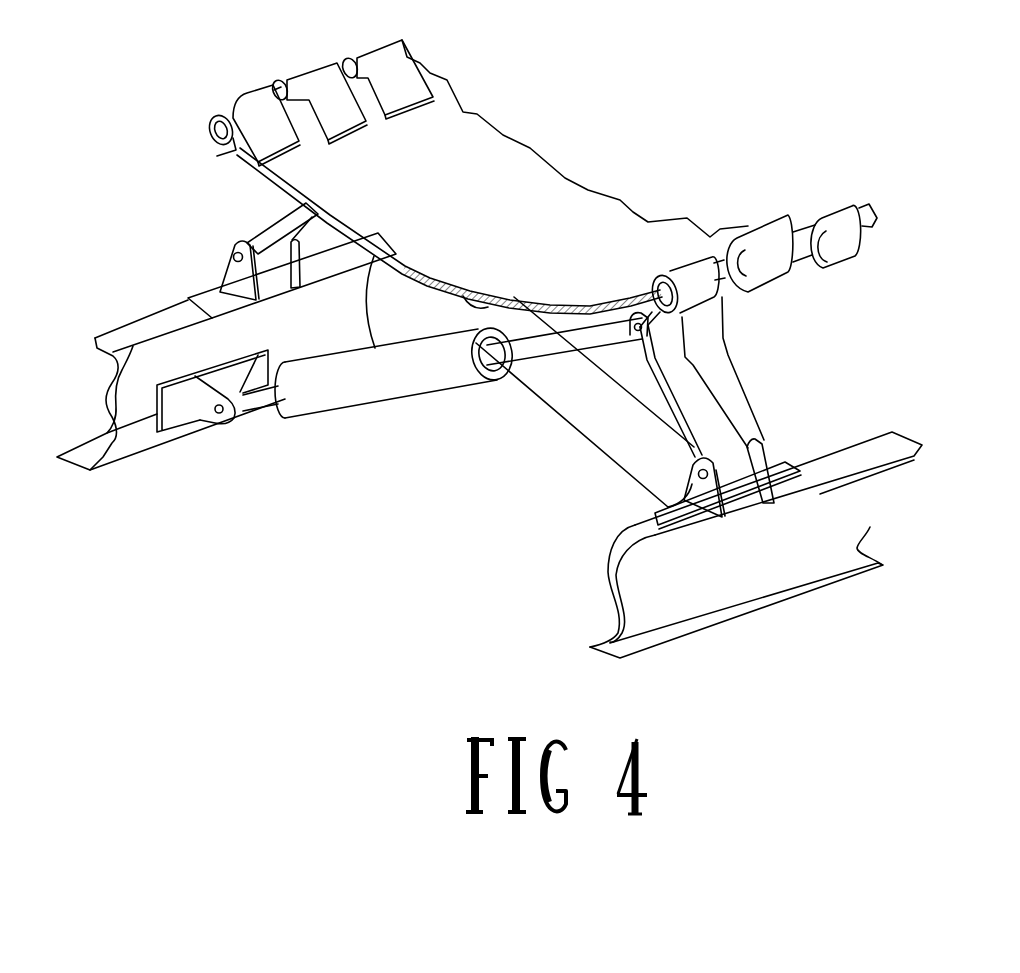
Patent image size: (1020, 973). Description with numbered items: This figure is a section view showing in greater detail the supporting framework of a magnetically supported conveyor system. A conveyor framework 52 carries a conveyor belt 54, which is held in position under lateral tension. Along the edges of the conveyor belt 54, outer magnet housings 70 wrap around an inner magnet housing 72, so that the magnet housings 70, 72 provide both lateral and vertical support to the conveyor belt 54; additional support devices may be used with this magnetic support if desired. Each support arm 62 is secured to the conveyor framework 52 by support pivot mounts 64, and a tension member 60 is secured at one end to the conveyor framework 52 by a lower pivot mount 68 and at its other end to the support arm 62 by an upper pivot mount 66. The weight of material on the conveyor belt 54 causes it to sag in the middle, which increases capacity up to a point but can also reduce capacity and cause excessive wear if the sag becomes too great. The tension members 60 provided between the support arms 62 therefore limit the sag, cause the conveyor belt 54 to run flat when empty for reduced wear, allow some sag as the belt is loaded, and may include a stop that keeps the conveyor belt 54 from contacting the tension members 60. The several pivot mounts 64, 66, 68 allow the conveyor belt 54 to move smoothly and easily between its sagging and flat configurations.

The conveyor framework 52 is at (130, 437).
The conveyor belt 54 is at (557, 195).
The tension member 60 is at (322, 403).
The support arm 62 is at (290, 223).
The support pivot mount 64 is at (223, 293).
The upper pivot mount 66 is at (643, 333).
The lower pivot mount 68 is at (178, 420).
The outer magnet housing 70 is at (248, 107).
The inner magnet housing 72 is at (338, 68).